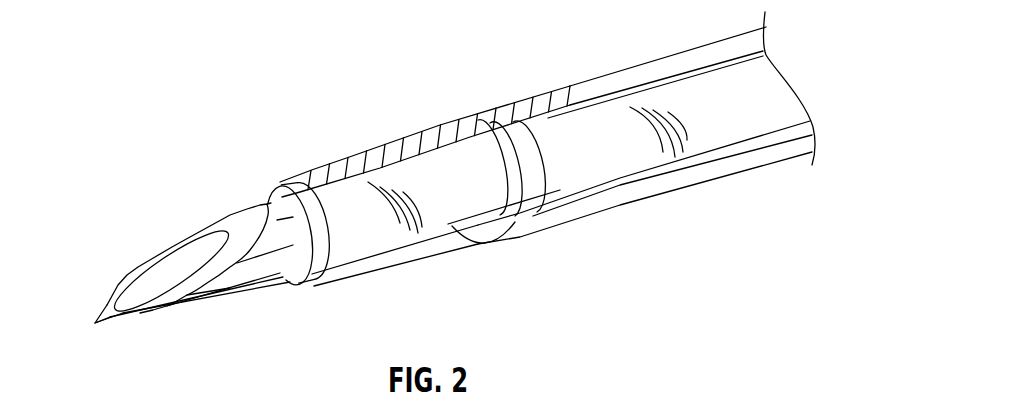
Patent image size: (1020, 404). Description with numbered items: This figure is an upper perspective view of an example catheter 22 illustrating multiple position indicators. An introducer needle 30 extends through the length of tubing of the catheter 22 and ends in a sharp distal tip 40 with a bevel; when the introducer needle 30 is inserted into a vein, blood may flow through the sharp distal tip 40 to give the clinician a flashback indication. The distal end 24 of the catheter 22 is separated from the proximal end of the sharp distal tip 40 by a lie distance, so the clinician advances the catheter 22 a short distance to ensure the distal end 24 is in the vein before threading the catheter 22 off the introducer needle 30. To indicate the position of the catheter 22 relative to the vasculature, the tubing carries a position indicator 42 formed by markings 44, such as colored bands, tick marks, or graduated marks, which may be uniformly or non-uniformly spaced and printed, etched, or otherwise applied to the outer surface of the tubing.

The catheter 22 is at (613, 207).
The distal end 24 is at (302, 171).
The introducer needle 30 is at (228, 287).
The sharp distal tip 40 is at (94, 323).
The position indicator 42 is at (433, 116).
The markings 44 is at (313, 170).